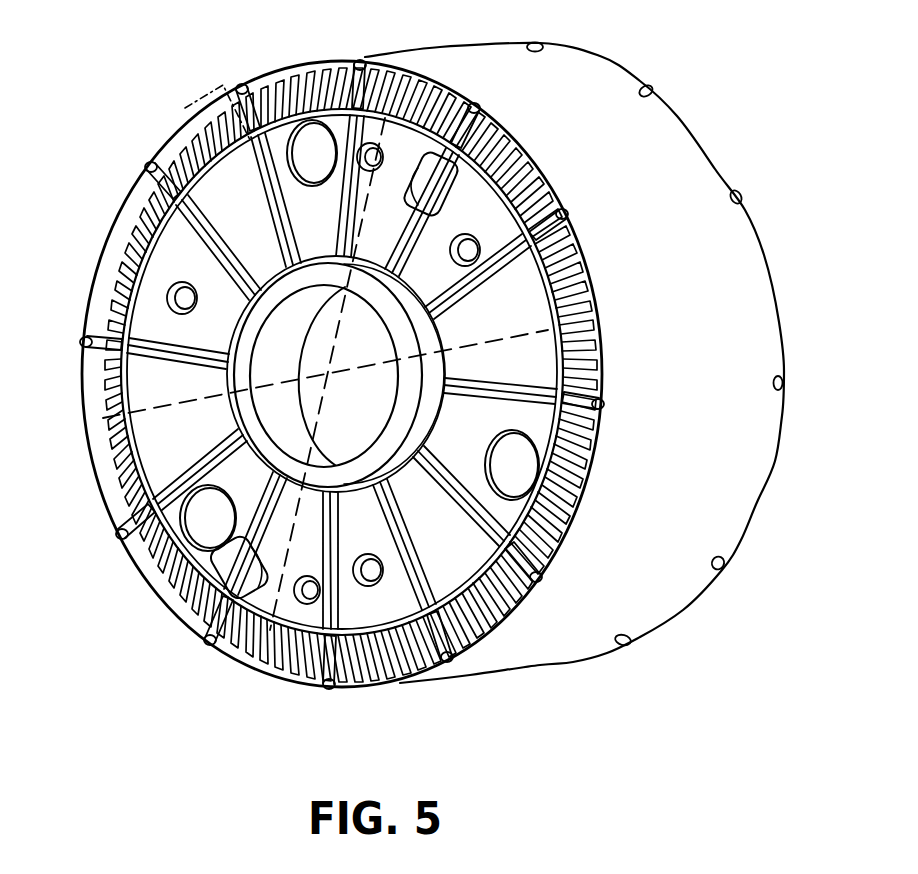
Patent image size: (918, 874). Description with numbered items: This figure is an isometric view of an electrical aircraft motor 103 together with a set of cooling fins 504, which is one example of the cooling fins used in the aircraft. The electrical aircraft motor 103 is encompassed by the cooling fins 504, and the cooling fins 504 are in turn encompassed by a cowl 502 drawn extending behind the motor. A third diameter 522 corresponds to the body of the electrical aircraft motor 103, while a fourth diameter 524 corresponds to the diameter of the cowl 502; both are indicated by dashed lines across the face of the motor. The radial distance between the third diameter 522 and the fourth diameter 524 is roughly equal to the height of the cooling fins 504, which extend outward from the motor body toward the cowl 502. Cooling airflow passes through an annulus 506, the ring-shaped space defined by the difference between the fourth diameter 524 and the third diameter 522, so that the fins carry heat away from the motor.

The electrical aircraft motor 103 is at (453, 577).
The cowl 502 is at (442, 47).
The set of cooling fins 504 is at (112, 398).
The annulus 506 is at (190, 106).
The third diameter 522 is at (273, 597).
The fourth diameter 524 is at (556, 326).